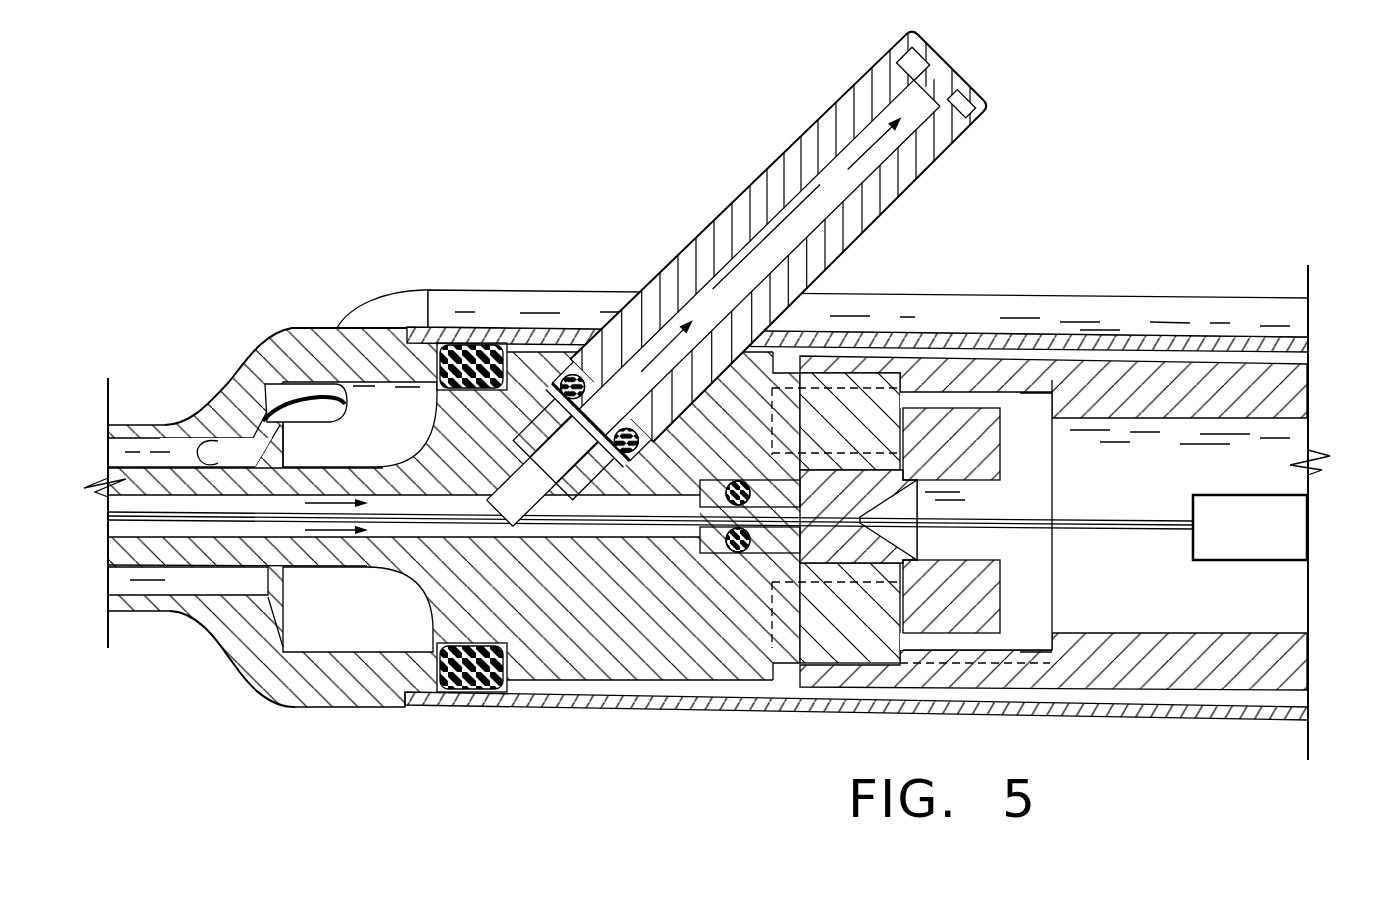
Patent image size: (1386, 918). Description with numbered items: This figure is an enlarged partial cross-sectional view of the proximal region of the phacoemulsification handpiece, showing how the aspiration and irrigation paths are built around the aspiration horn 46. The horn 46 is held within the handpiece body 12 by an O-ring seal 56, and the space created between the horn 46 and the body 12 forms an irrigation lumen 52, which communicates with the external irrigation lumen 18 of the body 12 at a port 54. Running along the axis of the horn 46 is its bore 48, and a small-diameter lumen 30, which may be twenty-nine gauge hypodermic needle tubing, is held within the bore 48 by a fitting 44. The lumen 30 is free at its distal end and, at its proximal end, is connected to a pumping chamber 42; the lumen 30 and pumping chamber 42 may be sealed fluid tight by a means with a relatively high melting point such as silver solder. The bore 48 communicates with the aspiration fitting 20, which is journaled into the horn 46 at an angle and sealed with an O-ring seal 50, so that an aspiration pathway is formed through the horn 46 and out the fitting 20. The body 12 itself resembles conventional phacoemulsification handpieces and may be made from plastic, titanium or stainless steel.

The handpiece body 12 is at (1326, 343).
The external irrigation lumen 18 is at (1038, 277).
The aspiration fitting 20 is at (743, 191).
The lumen 30 is at (105, 521).
The pumping chamber 42 is at (1243, 494).
The fitting 44 is at (1020, 578).
The aspiration horn 46 is at (400, 586).
The bore 48 is at (120, 506).
The O-ring seal 50 is at (612, 350).
The irrigation lumen 52 is at (145, 458).
The port 54 is at (296, 415).
The O-ring seal 56 is at (460, 673).